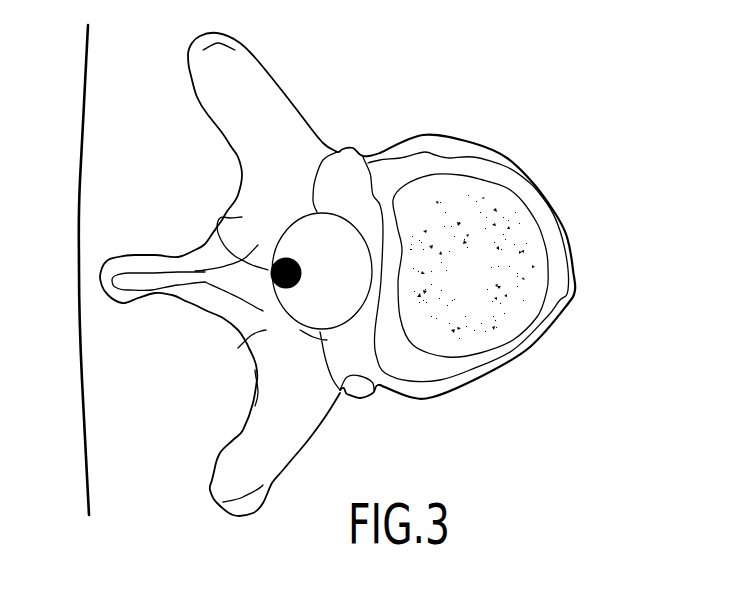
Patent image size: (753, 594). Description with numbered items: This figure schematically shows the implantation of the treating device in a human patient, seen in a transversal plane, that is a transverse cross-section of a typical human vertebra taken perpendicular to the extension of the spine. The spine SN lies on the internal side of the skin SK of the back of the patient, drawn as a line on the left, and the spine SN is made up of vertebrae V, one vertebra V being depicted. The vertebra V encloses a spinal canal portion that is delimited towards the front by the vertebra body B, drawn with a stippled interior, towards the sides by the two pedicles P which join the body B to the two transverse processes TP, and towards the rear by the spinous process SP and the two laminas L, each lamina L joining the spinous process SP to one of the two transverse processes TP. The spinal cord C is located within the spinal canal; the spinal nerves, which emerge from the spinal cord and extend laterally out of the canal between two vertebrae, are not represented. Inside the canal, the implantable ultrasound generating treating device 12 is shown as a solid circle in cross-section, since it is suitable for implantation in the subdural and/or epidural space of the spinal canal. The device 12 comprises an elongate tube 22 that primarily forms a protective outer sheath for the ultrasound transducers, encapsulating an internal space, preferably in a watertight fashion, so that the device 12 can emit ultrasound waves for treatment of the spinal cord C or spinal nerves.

The skin SK is at (80, 137).
The transverse process TP is at (202, 38).
The pedicle P is at (358, 148).
The vertebra V is at (565, 313).
The vertebra body B is at (488, 304).
The spinal cord C is at (298, 243).
The implantable ultrasound generating treating device 12 is at (314, 284).
The elongate tube 22 is at (302, 268).
The spinous process SP is at (131, 283).
The lamina L is at (222, 217).
The spine SN is at (610, 194).